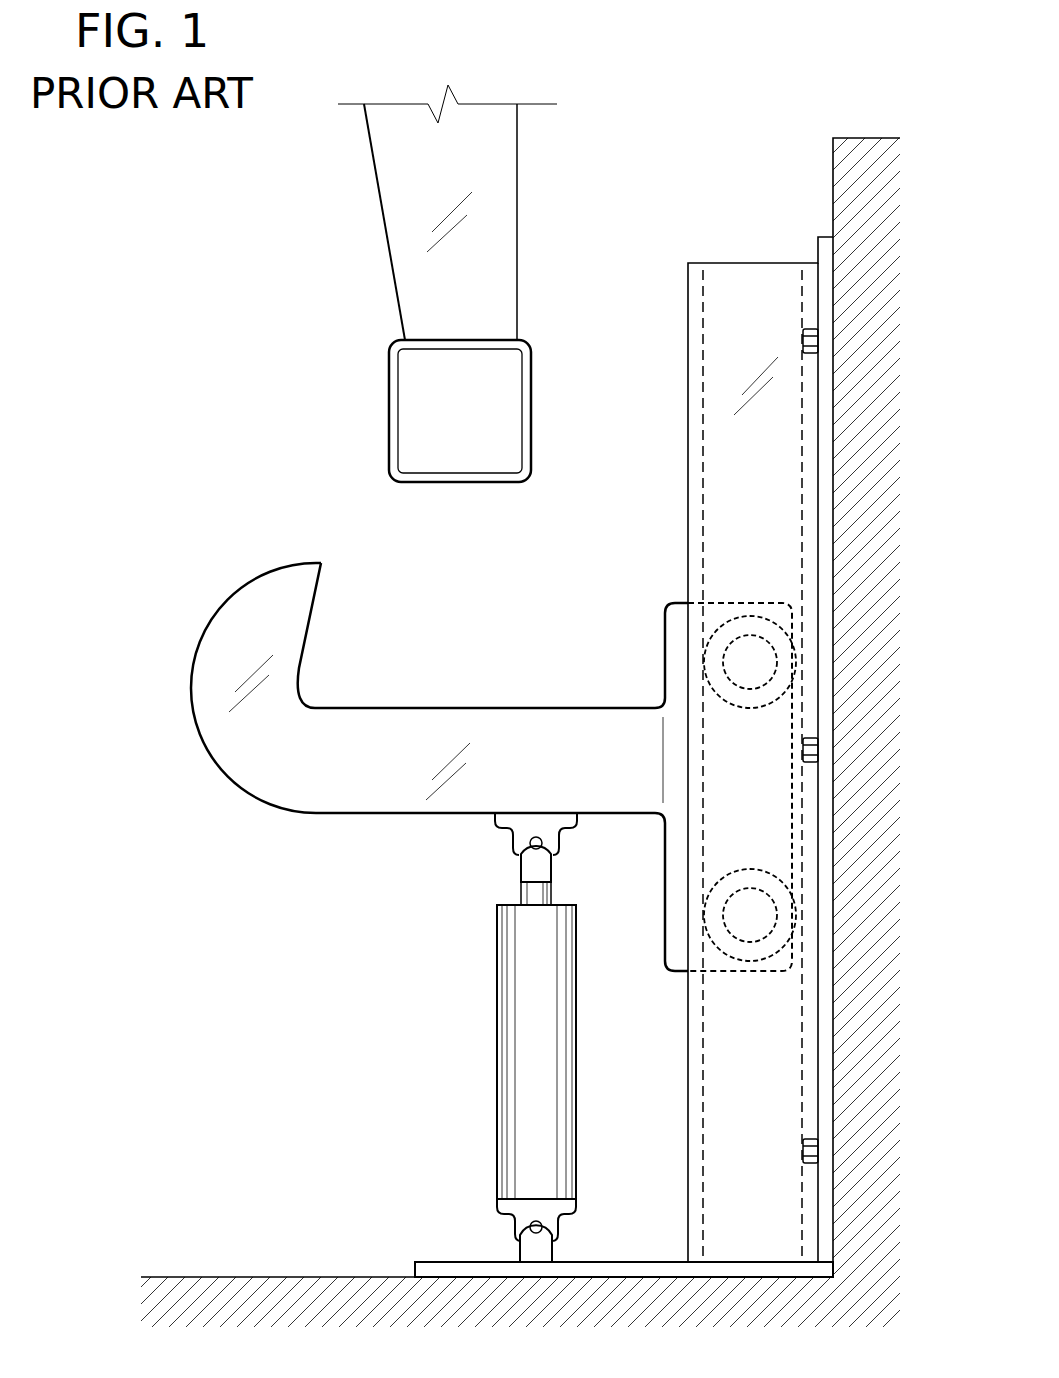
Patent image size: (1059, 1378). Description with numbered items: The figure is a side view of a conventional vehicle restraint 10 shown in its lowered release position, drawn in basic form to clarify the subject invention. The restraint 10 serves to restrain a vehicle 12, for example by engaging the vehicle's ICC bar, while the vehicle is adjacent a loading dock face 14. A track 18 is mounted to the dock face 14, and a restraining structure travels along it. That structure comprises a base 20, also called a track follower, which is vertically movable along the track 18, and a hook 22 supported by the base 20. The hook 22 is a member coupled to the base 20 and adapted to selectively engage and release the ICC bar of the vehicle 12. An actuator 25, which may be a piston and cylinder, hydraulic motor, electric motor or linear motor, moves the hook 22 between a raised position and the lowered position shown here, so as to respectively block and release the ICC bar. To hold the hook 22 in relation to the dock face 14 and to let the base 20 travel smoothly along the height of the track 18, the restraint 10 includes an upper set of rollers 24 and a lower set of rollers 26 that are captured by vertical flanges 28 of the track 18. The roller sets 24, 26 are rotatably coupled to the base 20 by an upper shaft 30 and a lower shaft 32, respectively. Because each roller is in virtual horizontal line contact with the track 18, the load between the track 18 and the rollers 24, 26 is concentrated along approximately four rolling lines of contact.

The vehicle restraint 10 is at (110, 637).
The vehicle 12 is at (389, 398).
The loading dock face 14 is at (833, 167).
The track 18 is at (688, 397).
The base 20 is at (665, 607).
The hook 22 is at (226, 598).
The upper set of rollers 24 is at (719, 625).
The actuator 25 is at (497, 1029).
The lower set of rollers 26 is at (727, 958).
The vertical flanges 28 is at (703, 318).
The upper shaft 30 is at (742, 688).
The lower shaft 32 is at (724, 915).